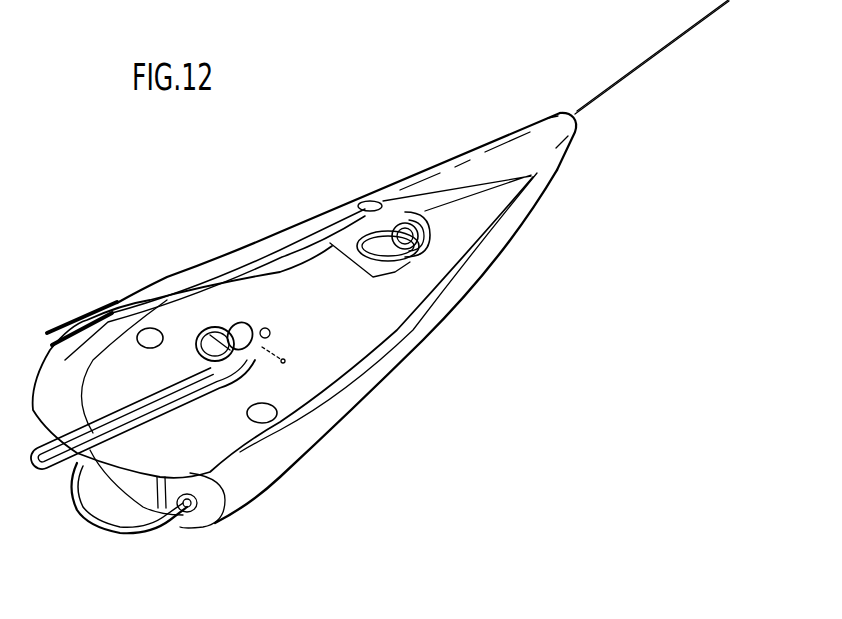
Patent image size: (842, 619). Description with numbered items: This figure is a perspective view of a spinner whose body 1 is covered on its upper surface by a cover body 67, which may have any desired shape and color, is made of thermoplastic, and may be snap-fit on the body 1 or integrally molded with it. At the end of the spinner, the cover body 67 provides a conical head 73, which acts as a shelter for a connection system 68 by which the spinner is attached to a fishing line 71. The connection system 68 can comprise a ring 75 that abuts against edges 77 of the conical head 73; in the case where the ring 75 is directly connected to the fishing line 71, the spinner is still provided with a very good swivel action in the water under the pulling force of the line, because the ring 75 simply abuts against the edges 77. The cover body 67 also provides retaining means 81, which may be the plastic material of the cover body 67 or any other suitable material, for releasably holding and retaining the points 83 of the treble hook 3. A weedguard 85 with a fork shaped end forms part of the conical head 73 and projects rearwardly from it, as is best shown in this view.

The body 1 is at (377, 357).
The treble hook 3 is at (77, 515).
The cover body 67 is at (267, 476).
The connection system 68 is at (426, 268).
The fishing line 71 is at (659, 55).
The conical head 73 is at (494, 150).
The ring 75 is at (387, 262).
The edges 77 is at (417, 240).
The retaining means 81 is at (193, 513).
The points 83 is at (180, 520).
The weedguard 85 is at (205, 276).